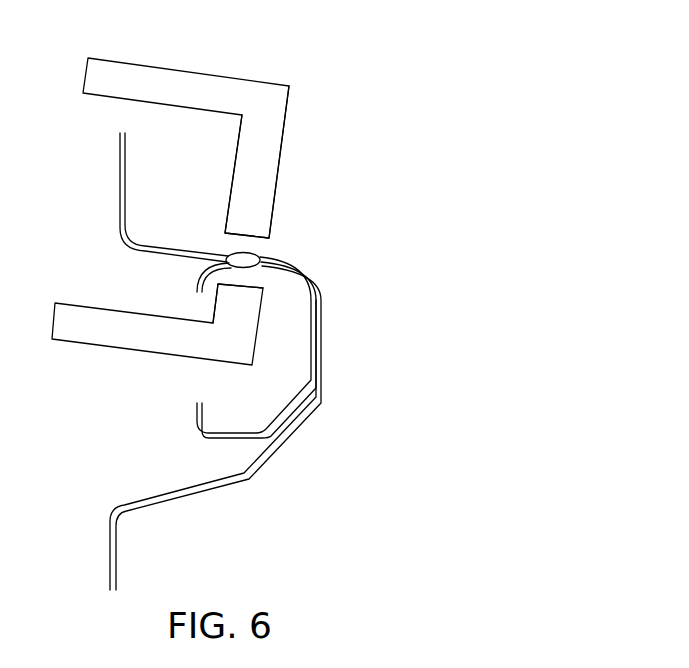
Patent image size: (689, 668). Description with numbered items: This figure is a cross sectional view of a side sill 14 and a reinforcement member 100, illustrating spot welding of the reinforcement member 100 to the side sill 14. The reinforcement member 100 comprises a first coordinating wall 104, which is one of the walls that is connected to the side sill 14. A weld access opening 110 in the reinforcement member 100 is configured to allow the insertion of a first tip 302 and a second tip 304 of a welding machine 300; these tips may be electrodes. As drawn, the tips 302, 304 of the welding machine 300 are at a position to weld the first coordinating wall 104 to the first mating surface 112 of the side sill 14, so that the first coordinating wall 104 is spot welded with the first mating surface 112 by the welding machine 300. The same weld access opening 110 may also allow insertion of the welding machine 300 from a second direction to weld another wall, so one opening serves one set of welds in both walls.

The side sill 14 is at (280, 456).
The reinforcement member 100 is at (180, 425).
The first coordinating wall 104 is at (268, 268).
The weld access opening 110 is at (213, 380).
The first mating surface 112 is at (277, 257).
The welding machine 300 is at (194, 66).
The first tip 302 is at (213, 316).
The second tip 304 is at (258, 173).